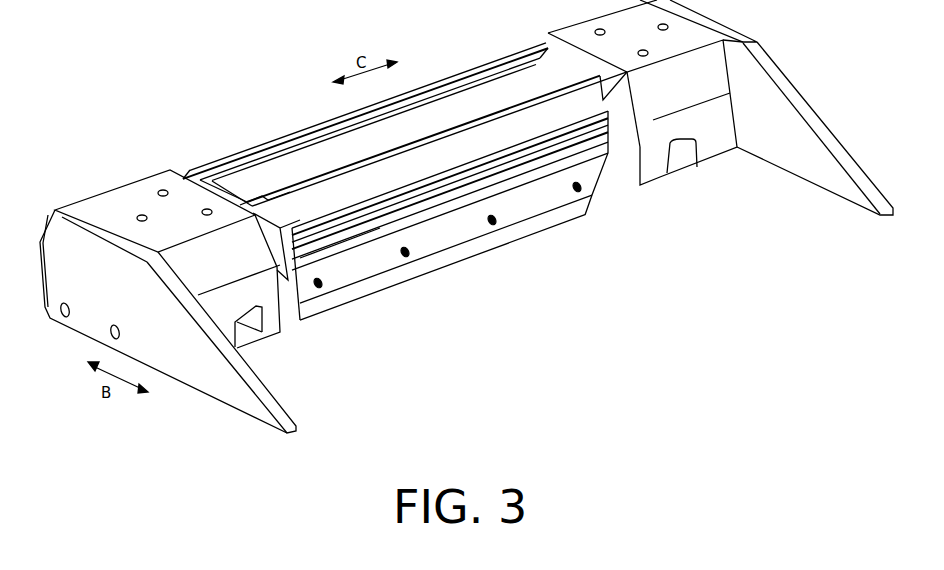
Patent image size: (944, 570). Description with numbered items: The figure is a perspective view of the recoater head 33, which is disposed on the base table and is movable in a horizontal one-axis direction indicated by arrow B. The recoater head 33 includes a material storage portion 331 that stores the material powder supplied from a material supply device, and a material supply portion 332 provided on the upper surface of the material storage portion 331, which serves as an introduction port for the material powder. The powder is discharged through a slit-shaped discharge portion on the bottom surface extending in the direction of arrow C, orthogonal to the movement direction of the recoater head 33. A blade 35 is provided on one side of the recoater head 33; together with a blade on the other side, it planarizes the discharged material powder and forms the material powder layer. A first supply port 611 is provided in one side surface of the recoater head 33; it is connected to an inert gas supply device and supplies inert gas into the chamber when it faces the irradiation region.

The recoater head 33 is at (190, 76).
The material storage portion 331 is at (303, 200).
The material supply portion 332 is at (528, 46).
The blade 35 is at (572, 213).
The first supply port 611 is at (370, 248).